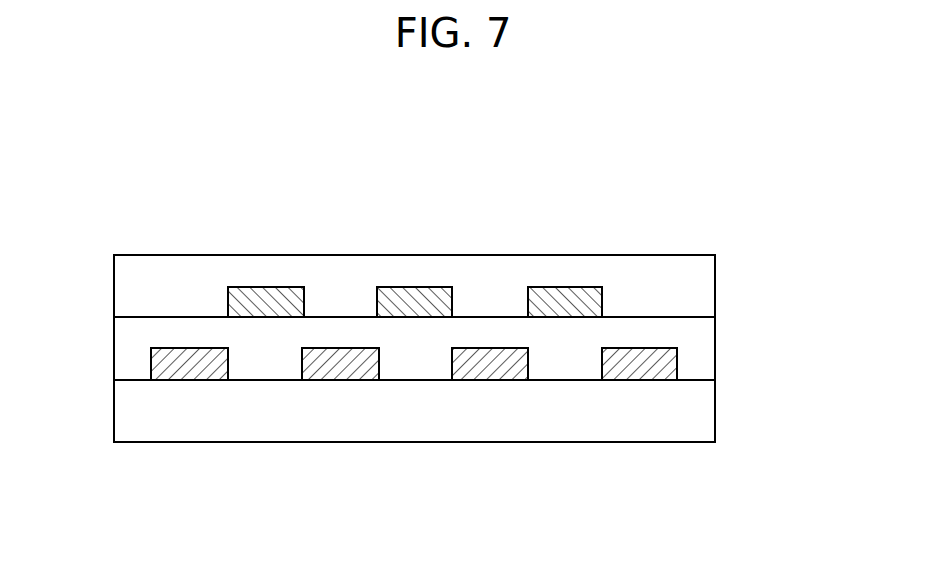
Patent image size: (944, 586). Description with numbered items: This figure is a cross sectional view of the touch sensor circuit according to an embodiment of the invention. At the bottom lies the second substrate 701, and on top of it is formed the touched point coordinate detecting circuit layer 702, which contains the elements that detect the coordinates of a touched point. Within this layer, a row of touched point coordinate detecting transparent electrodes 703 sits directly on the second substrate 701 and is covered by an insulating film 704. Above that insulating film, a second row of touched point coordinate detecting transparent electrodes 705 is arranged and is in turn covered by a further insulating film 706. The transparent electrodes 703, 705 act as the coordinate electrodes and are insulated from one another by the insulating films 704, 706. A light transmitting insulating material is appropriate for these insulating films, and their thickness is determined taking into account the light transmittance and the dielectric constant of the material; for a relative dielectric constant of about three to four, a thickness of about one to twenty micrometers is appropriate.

The second substrate 701 is at (676, 407).
The touched point coordinate detecting circuit layer 702 is at (100, 255).
The touched point coordinate detecting transparent electrode 703 is at (639, 367).
The insulating film 704 is at (695, 352).
The touched point coordinate detecting transparent electrode 705 is at (566, 303).
The insulating film 706 is at (678, 292).